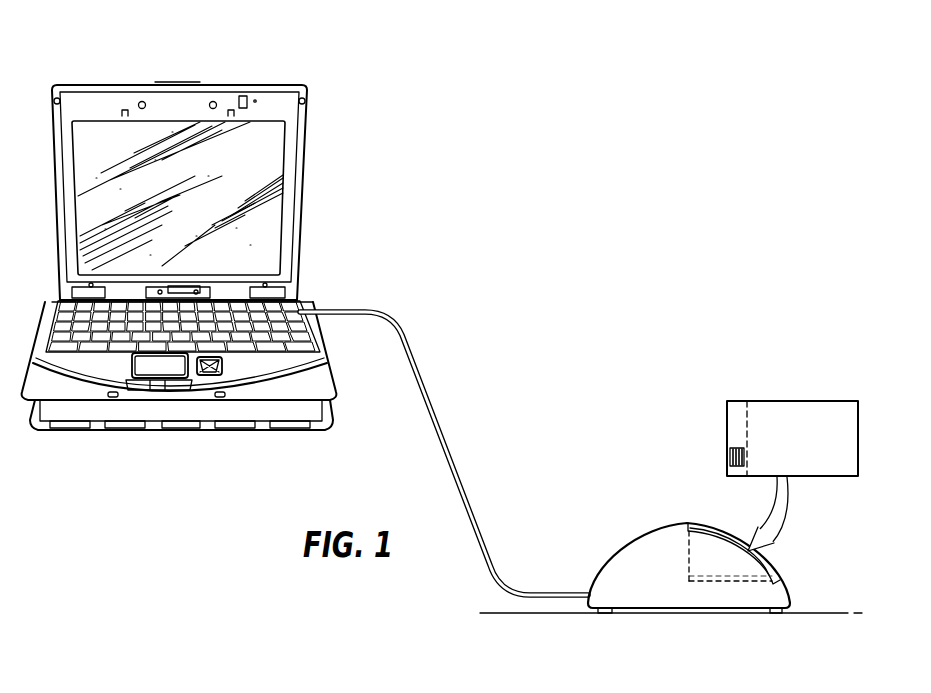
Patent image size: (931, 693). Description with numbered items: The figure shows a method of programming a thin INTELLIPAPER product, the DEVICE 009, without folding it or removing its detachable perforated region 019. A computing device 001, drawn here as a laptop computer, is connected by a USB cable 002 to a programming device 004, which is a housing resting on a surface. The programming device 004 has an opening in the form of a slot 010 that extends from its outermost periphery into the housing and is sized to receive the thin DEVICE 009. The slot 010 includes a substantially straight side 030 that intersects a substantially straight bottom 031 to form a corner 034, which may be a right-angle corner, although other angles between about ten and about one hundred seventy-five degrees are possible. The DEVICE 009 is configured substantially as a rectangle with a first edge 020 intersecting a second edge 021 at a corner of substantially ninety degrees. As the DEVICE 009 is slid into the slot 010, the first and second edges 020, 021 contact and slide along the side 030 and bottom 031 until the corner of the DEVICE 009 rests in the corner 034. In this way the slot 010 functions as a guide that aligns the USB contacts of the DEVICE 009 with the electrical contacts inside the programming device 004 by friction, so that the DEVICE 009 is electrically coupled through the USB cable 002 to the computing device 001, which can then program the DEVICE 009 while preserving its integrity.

The computing device 001 is at (303, 173).
The USB cable 002 is at (447, 425).
The programming device 004 is at (792, 595).
The DEVICE 009 is at (826, 400).
The slot 010 is at (775, 568).
The detachable perforated region 019 is at (737, 415).
The first edge 020 is at (727, 437).
The second edge 021 is at (737, 477).
The side 030 is at (688, 560).
The bottom 031 is at (727, 583).
The corner 034 is at (688, 580).